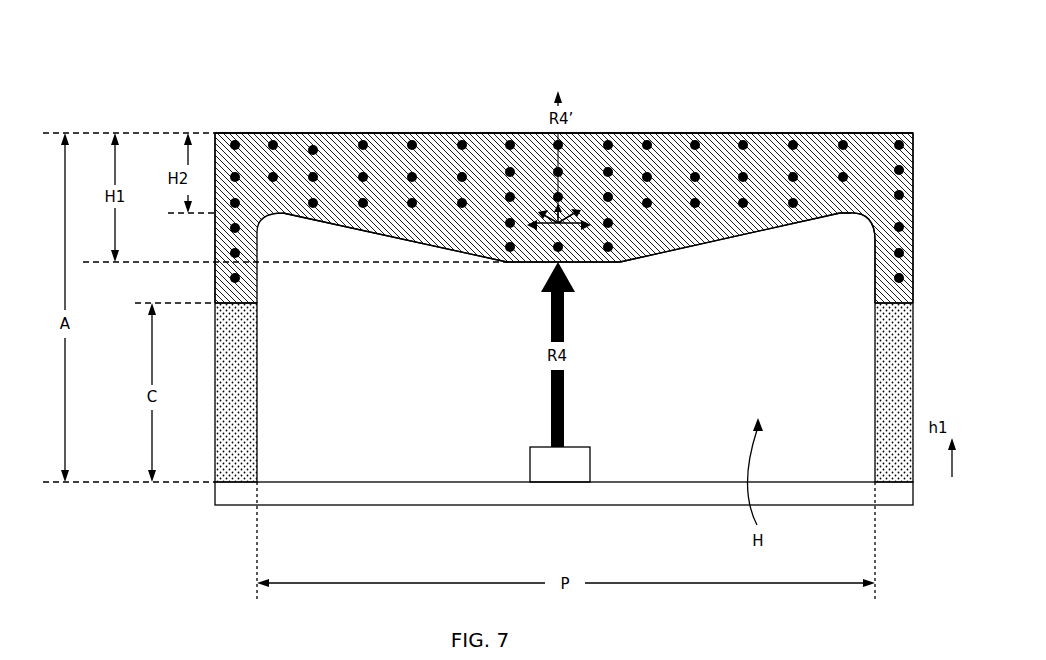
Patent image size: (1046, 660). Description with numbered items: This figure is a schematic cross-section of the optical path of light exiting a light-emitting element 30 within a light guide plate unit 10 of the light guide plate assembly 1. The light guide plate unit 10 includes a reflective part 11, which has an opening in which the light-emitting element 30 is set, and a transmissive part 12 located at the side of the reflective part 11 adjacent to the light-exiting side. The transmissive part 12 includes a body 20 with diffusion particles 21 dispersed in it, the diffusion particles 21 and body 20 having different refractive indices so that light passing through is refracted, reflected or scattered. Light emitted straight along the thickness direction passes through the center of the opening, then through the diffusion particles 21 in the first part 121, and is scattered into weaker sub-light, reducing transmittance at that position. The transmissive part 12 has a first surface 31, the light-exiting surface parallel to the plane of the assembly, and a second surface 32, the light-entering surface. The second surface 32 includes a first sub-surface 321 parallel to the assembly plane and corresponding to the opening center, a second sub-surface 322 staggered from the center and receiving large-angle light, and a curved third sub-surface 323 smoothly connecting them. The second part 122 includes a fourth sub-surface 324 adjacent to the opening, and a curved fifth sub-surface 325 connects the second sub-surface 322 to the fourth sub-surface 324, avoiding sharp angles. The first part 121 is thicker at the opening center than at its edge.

The light guide plate assembly 1 is at (549, 281).
The light guide plate unit 10 is at (549, 281).
The reflective part 11 is at (232, 472).
The transmissive part 12 is at (233, 51).
The body 20 is at (815, 148).
The diffusion particles 21 is at (690, 133).
The light-emitting element 30 is at (562, 487).
The first surface 31 is at (736, 133).
The second surface 32 is at (566, 273).
The first part 121 is at (488, 145).
The second part 122 is at (240, 133).
The first sub-surface 321 is at (578, 266).
The second sub-surface 322 is at (758, 233).
The third sub-surface 323 is at (625, 265).
The fourth sub-surface 324 is at (872, 272).
The fifth sub-surface 325 is at (862, 222).